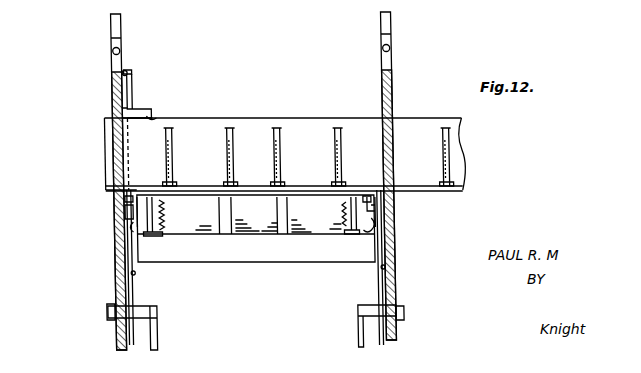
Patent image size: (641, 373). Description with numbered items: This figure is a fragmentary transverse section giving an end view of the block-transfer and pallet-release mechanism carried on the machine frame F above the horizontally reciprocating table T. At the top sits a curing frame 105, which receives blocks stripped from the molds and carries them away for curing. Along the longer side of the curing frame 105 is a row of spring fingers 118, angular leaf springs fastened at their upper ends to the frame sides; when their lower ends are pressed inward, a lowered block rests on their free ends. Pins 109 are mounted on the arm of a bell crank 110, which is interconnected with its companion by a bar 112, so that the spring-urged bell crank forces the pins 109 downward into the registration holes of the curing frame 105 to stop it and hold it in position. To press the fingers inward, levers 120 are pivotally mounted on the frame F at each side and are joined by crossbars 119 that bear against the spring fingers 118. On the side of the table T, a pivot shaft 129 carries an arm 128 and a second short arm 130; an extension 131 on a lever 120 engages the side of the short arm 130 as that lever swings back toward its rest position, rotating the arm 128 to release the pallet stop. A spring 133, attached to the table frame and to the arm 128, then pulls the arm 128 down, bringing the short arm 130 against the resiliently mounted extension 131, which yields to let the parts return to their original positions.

The curing frame 105 is at (320, 124).
The pins 109 is at (155, 118).
The bell crank 110 is at (137, 92).
The bar 112 is at (129, 72).
The spring fingers 118 is at (272, 138).
The crossbars 119 is at (312, 185).
The levers 120 is at (128, 280).
The arm 128 is at (164, 212).
The pivot shaft 129 is at (126, 204).
The short arm 130 is at (128, 214).
The extension 131 is at (128, 226).
The spring 133 is at (163, 236).
The frame F is at (399, 96).
The table T is at (268, 264).